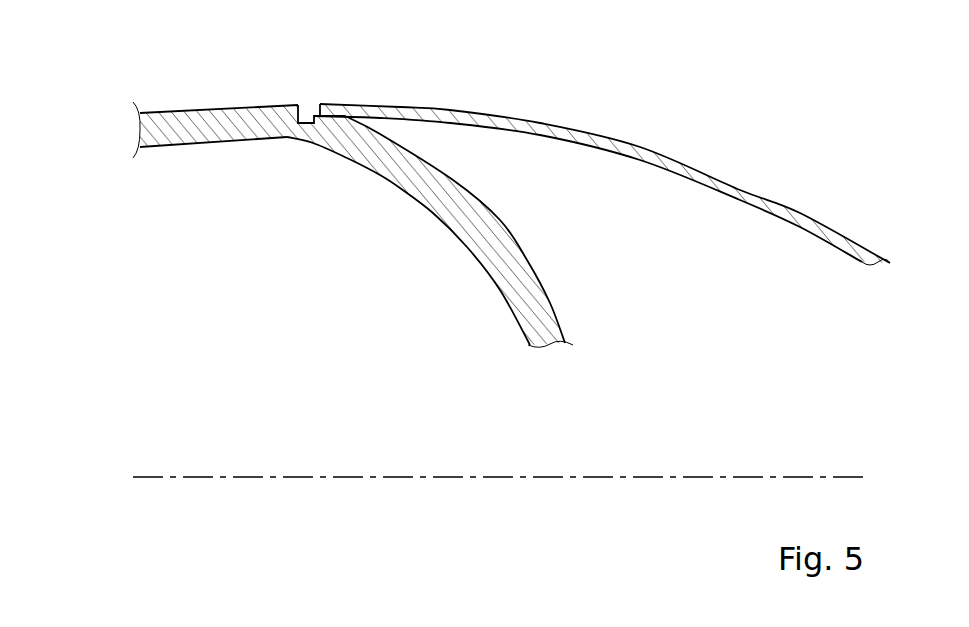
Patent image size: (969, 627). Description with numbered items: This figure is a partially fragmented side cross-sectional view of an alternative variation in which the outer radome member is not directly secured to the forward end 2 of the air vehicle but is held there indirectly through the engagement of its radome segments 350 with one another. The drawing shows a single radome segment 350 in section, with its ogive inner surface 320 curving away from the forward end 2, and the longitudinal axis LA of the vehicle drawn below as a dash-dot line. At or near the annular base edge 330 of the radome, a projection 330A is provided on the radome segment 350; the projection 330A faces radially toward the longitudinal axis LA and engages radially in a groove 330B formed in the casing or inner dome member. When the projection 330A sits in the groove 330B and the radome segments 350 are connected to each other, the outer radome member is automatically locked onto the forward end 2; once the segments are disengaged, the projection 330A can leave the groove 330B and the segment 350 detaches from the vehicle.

The forward end 2 is at (198, 107).
The annular base edge 330 is at (299, 106).
The projection 330A is at (306, 113).
The groove 330B is at (307, 132).
The ogive inner surface 320 is at (525, 258).
The radome segment 350 is at (640, 147).
The longitudinal axis LA is at (387, 475).